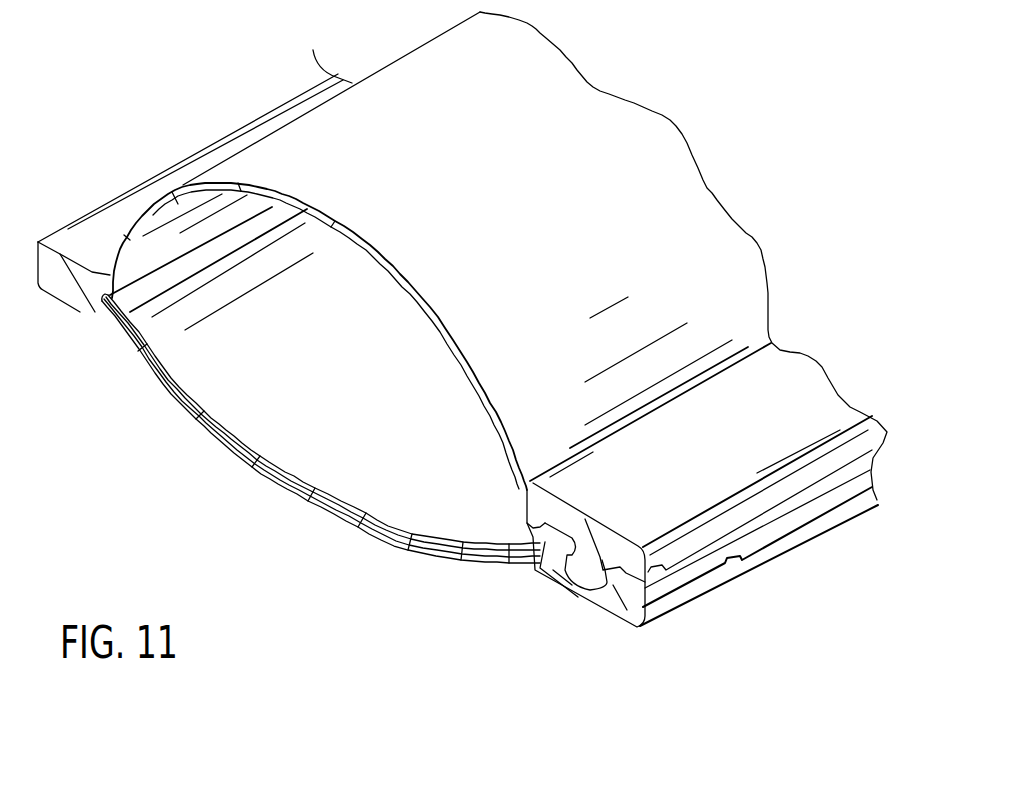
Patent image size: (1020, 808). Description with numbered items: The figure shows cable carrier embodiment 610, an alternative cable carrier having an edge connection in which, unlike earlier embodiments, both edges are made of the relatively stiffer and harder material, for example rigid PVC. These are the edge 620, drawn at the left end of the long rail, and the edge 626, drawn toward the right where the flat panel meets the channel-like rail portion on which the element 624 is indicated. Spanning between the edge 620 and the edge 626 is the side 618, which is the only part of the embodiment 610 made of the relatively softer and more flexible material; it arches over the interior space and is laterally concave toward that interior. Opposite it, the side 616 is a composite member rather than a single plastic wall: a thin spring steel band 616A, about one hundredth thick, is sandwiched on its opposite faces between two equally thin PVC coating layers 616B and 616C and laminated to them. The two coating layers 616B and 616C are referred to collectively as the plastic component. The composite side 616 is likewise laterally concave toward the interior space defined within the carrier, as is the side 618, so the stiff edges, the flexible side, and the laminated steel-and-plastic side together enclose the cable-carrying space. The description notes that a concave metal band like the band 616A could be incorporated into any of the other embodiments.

The cable carrier embodiment 610 is at (195, 181).
The side 616 is at (305, 378).
The spring steel band 616A is at (187, 410).
The coating layer of PVC 616B is at (200, 366).
The coating layer of PVC 616C is at (240, 457).
The side 618 is at (338, 117).
The edge 620 is at (82, 208).
The channel 624 is at (744, 571).
The edge 626 is at (802, 397).